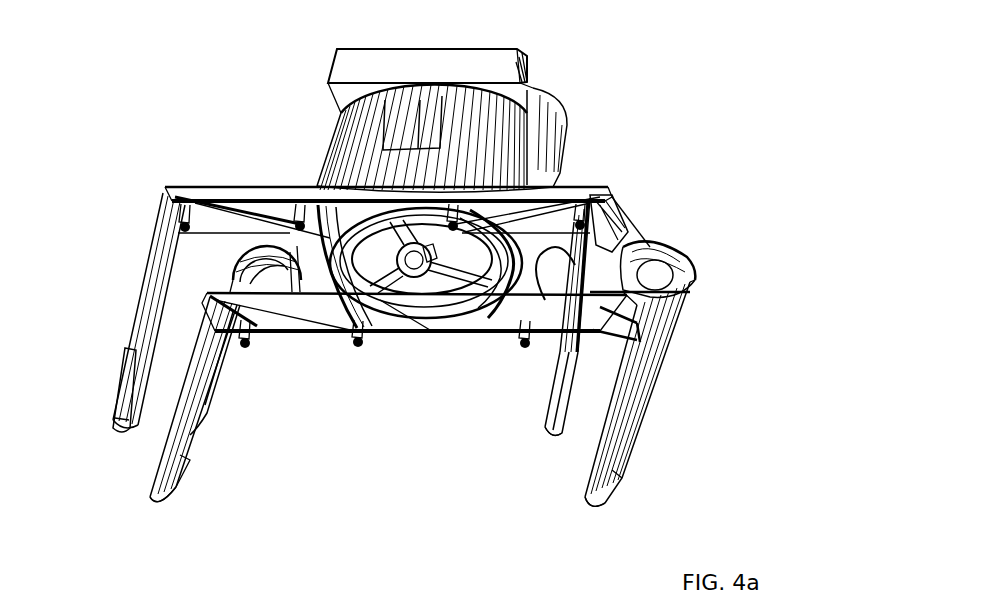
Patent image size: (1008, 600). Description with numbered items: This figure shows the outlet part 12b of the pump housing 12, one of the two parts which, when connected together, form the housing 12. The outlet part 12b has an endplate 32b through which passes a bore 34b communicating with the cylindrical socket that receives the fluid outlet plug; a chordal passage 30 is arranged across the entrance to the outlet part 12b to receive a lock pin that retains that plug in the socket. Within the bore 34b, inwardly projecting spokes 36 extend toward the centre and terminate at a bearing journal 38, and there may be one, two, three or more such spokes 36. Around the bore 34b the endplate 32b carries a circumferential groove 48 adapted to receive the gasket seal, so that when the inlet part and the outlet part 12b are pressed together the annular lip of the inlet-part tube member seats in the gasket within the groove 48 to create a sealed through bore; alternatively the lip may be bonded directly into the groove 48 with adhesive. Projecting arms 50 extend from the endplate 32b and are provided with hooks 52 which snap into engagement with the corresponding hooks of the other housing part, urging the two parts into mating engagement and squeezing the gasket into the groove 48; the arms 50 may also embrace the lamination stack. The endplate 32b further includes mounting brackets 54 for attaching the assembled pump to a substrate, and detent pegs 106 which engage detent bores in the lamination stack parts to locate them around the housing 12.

The housing 12 is at (603, 115).
The outlet part 12b is at (563, 170).
The chordal passage 30 is at (533, 75).
The endplate 32b is at (312, 193).
The bore 34b is at (343, 337).
The spokes 36 is at (448, 337).
The bearing journal 38 is at (369, 335).
The circumferential groove 48 is at (485, 337).
The projecting arms 50 is at (153, 493).
The hooks 52 is at (128, 347).
The mounting brackets 54 is at (660, 238).
The detent pegs 106 is at (292, 205).